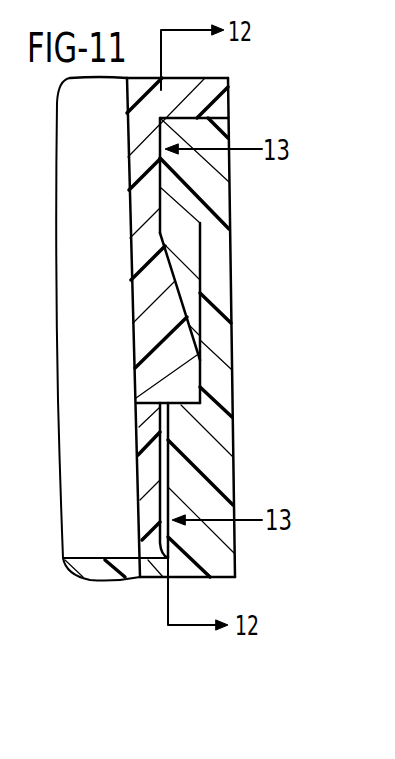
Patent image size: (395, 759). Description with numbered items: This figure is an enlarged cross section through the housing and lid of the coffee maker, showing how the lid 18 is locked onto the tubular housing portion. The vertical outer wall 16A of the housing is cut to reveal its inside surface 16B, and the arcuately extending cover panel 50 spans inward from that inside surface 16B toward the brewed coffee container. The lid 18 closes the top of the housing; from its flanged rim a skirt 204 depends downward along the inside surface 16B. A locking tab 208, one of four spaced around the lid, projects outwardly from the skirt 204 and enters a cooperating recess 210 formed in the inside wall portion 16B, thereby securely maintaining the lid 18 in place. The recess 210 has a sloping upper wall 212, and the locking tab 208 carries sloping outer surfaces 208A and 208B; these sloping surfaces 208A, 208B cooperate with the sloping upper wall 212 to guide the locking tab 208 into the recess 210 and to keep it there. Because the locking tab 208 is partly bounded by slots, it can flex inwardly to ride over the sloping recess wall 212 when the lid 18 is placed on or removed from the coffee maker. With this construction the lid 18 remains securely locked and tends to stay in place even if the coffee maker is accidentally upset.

The outer wall 16A is at (223, 480).
The inside surface 16B is at (160, 470).
The lid 18 is at (238, 83).
The cover panel 50 is at (95, 566).
The skirt 204 is at (145, 463).
The locking tab 208 is at (229, 313).
The sloping outer surface 208A is at (185, 281).
The sloping outer surface 208B is at (202, 382).
The recess 210 is at (200, 242).
The sloping upper wall 212 is at (182, 206).